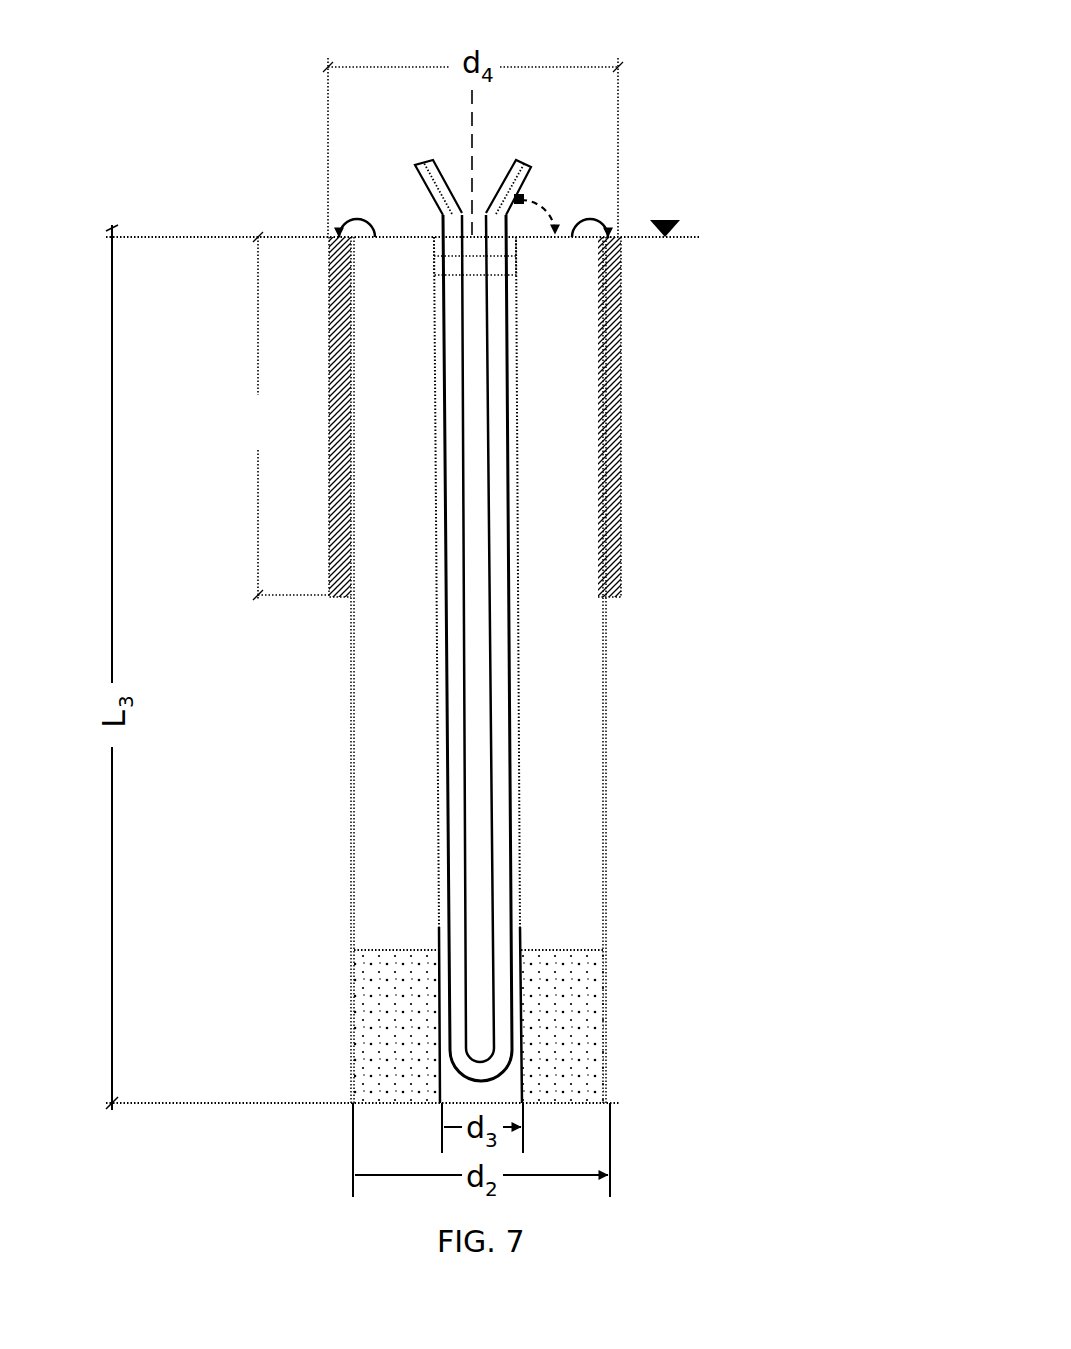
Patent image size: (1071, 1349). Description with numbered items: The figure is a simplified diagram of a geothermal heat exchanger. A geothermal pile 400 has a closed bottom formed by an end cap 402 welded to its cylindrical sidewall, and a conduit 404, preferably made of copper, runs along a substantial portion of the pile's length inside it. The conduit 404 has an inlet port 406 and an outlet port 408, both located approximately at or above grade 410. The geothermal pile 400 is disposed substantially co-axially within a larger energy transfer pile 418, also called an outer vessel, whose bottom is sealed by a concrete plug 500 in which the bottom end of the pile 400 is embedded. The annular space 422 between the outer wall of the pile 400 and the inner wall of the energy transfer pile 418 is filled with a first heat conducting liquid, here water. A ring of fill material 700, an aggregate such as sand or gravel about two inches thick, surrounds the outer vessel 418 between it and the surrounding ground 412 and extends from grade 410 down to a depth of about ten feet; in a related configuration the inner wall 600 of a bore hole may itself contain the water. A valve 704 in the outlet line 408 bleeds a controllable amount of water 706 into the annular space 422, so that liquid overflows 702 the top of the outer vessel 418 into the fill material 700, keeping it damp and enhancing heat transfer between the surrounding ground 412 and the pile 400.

The geothermal pile 400 is at (523, 703).
The end cap 402 is at (467, 1093).
The conduit 404 is at (493, 445).
The inlet port 406 is at (415, 165).
The outlet port 408 is at (528, 165).
The grade 410 is at (665, 222).
The surrounding ground 412 is at (833, 438).
The energy transfer pile 418 is at (350, 840).
The annular space 422 is at (557, 803).
The concrete plug 500 is at (566, 1033).
The inner wall of the bore hole 600 is at (260, 416).
The fill material 700 is at (610, 320).
The overflowed liquid 702 is at (355, 218).
The valve 704 is at (524, 200).
The water 706 is at (550, 207).